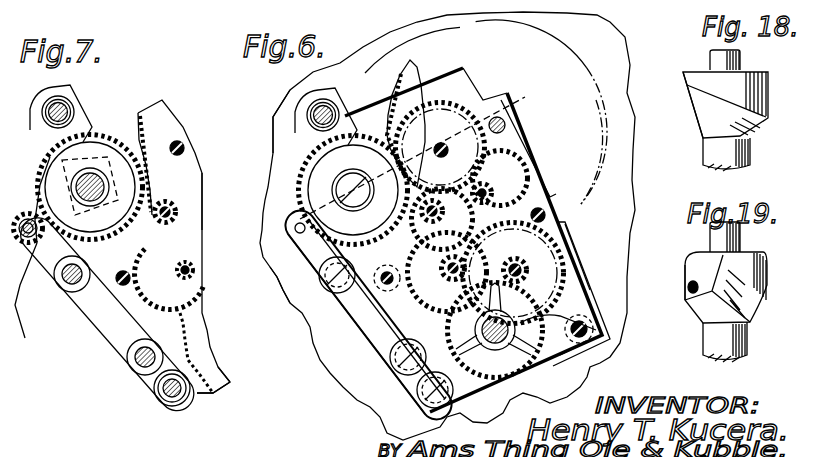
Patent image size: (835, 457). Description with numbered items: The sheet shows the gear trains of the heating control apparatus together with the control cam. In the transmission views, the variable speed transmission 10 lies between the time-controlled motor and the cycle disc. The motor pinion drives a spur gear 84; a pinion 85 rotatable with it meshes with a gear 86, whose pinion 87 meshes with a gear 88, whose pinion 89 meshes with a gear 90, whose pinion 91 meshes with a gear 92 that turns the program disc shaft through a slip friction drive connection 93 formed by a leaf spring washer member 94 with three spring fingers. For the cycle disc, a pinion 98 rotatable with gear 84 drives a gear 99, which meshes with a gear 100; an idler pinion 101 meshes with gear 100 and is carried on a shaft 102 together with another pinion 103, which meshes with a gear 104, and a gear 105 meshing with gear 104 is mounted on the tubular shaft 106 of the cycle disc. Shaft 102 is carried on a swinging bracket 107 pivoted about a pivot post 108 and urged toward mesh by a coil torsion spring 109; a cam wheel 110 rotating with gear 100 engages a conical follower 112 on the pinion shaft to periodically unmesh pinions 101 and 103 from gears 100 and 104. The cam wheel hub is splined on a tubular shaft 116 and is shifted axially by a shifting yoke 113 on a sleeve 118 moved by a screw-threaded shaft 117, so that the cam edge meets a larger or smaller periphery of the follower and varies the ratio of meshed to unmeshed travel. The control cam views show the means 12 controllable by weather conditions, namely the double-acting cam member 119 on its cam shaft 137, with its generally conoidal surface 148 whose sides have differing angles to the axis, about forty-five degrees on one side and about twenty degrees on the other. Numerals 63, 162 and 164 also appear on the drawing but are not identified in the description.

In FIG. 7, the variable speed transmission 10 is at (203, 167).
In FIG. 6, the variable speed transmission 10 is at (437, 92).
In FIG. 18, the means controllable by weather conditions 12 is at (751, 155).
In FIG. 19, the means controllable by weather conditions 12 is at (748, 338).
In FIG. 6, the gear 63 is at (447, 271).
In FIG. 6, the spur gear 84 is at (527, 147).
In FIG. 6, the pinion 85 is at (532, 158).
In FIG. 7, the gear 86 is at (122, 266).
In FIG. 6, the gear 86 is at (494, 201).
In FIG. 7, the pinion 87 is at (180, 205).
In FIG. 6, the pinion 87 is at (417, 223).
In FIG. 7, the gear 88 is at (188, 242).
In FIG. 6, the gear 88 is at (406, 310).
In FIG. 7, the pinion 89 is at (197, 283).
In FIG. 6, the pinion 89 is at (365, 333).
In FIG. 6, the gear 90 is at (570, 247).
In FIG. 6, the pinion 91 is at (525, 260).
In FIG. 7, the gear 92 is at (214, 394).
In FIG. 6, the gear 92 is at (545, 338).
In FIG. 6, the slip friction drive connection 93 is at (515, 358).
In FIG. 6, the leaf spring washer member 94 is at (596, 318).
In FIG. 6, the pinion 98 is at (536, 184).
In FIG. 7, the gear 99 is at (162, 104).
In FIG. 6, the gear 99 is at (447, 98).
In FIG. 7, the gear 100 is at (114, 132).
In FIG. 7, the pinion 101 is at (25, 212).
In FIG. 7, the shaft 102 is at (26, 338).
In FIG. 6, the shaft 102 is at (279, 282).
In FIG. 6, the pinion 103 is at (296, 226).
In FIG. 6, the gear 104 is at (296, 192).
In FIG. 6, the gear 105 is at (398, 68).
In FIG. 6, the tubular shaft 106 is at (507, 113).
In FIG. 7, the swinging bracket 107 is at (105, 344).
In FIG. 6, the swinging bracket 107 is at (360, 345).
In FIG. 7, the pivot post 108 is at (163, 397).
In FIG. 6, the pivot post 108 is at (405, 400).
In FIG. 6, the coil torsion spring 109 is at (403, 315).
In FIG. 7, the cam wheel 110 is at (50, 157).
In FIG. 6, the cam wheel 110 is at (273, 157).
In FIG. 7, the conical follower 112 is at (26, 250).
In FIG. 7, the shifting yoke 113 is at (88, 113).
In FIG. 6, the shifting yoke 113 is at (327, 84).
In FIG. 7, the tubular shaft 116 is at (90, 187).
In FIG. 7, the screw-threaded shaft 117 is at (54, 102).
In FIG. 6, the screw-threaded shaft 117 is at (308, 108).
In FIG. 7, the sleeve 118 is at (47, 106).
In FIG. 6, the sleeve 118 is at (311, 100).
In FIG. 18, the double-acting cam member 119 is at (698, 131).
In FIG. 19, the double-acting cam member 119 is at (684, 264).
In FIG. 18, the cam shaft 137 is at (712, 58).
In FIG. 19, the cam shaft 137 is at (712, 240).
In FIG. 18, the conoidal surface 148 is at (706, 99).
In FIG. 19, the conoidal surface 148 is at (745, 296).
In FIG. 6, the arc track 162 is at (560, 223).
In FIG. 7, the frame plate edge 164 is at (232, 384).
In FIG. 6, the frame plate edge 164 is at (583, 279).